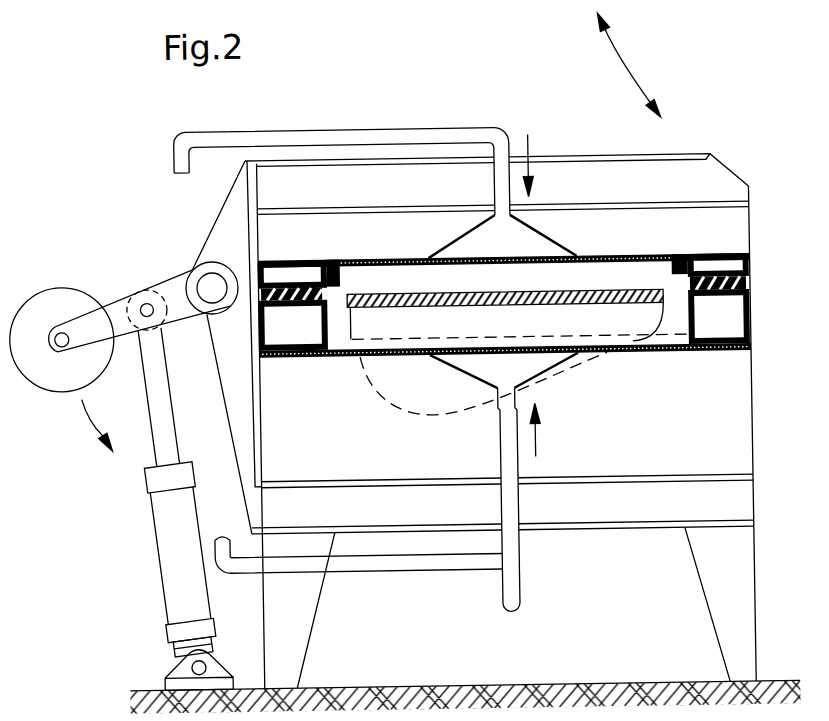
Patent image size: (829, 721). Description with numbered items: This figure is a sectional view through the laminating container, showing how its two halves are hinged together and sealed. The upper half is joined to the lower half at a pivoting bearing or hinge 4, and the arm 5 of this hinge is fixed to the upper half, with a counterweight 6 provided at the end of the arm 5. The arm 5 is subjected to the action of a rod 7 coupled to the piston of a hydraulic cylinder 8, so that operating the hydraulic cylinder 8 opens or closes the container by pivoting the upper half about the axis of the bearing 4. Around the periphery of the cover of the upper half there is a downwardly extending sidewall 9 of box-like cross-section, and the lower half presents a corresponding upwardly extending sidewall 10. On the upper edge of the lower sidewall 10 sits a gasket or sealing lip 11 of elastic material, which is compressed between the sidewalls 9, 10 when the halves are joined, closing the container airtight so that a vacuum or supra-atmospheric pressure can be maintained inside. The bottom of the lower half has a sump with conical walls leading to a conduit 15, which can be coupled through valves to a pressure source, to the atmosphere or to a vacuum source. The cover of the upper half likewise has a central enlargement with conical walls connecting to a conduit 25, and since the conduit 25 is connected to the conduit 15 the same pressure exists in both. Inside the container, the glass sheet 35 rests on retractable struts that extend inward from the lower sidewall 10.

The pivoting bearing or hinge 4 is at (206, 280).
The arm 5 is at (116, 299).
The counterweight 6 is at (51, 290).
The rod 7 is at (156, 427).
The hydraulic cylinder 8 is at (169, 560).
The downwardly extending sidewall 9 is at (753, 265).
The upwardly extending sidewall 10 is at (753, 334).
The gasket or sealing lip 11 is at (749, 286).
The conduit 15 is at (517, 592).
The conduit 25 is at (322, 126).
The glass sheet 35 is at (590, 318).